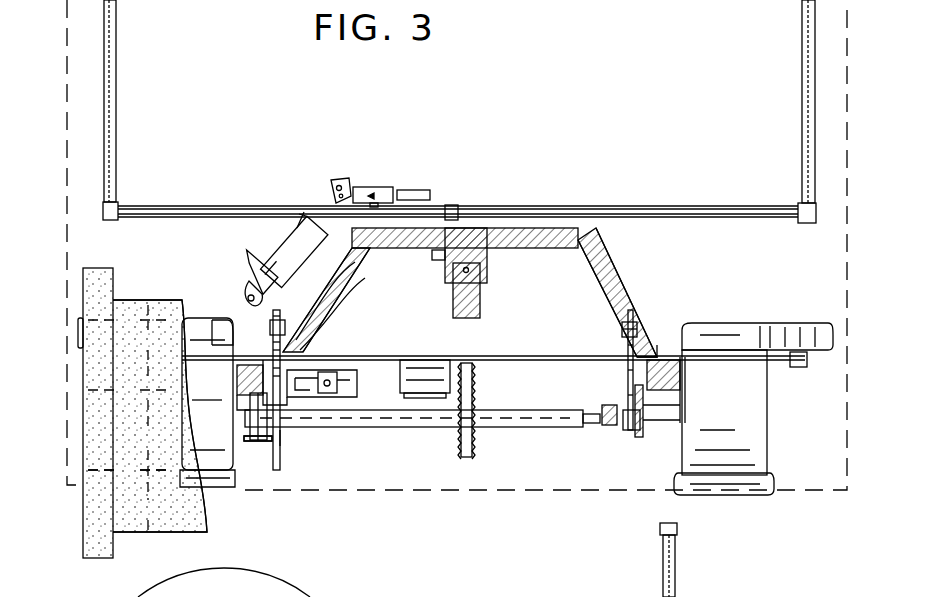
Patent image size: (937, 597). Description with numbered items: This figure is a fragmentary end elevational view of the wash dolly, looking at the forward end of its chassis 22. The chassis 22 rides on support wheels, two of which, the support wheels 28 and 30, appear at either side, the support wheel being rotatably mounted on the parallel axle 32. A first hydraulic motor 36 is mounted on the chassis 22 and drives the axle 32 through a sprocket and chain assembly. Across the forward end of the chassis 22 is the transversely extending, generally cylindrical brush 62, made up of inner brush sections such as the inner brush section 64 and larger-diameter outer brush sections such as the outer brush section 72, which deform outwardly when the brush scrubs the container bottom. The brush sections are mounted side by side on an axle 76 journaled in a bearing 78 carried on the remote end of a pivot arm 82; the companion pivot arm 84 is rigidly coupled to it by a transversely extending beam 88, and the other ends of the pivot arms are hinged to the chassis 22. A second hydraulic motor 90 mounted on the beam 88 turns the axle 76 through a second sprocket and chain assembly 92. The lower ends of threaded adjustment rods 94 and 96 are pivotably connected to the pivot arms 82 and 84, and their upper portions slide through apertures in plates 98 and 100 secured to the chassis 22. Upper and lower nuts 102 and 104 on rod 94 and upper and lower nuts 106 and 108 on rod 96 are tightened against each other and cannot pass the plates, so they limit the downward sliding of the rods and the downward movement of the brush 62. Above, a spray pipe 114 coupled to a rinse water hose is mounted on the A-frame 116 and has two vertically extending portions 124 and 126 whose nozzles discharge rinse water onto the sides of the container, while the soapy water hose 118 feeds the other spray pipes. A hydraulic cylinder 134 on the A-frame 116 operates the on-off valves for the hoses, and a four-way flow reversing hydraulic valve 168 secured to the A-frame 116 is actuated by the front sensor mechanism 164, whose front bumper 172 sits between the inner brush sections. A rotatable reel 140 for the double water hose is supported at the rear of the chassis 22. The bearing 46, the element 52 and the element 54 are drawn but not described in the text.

The chassis 22 is at (533, 358).
The support wheel 28 is at (745, 440).
The support wheel 30 is at (193, 318).
The axle 32 is at (593, 424).
The first hydraulic motor 36 is at (345, 376).
The bearing 46 is at (220, 320).
The roller housing 52 is at (803, 323).
The stub 54 is at (78, 332).
The brush 62 is at (158, 300).
The inner brush section 64 is at (165, 533).
The outer brush section 72 is at (100, 560).
The axle 76 is at (385, 430).
The bearing 78 is at (257, 433).
The pivot arm 82 is at (267, 437).
The pivot arm 84 is at (635, 393).
The beam 88 is at (610, 425).
The second hydraulic motor 90 is at (425, 365).
The second sprocket and chain assembly 92 is at (472, 372).
The threaded adjustment rod 94 is at (280, 388).
The threaded adjustment rod 96 is at (628, 382).
The plate 98 is at (303, 347).
The plate 100 is at (626, 352).
The upper nut 102 is at (322, 292).
The lower nut 104 is at (327, 303).
The upper nut 106 is at (640, 326).
The lower nut 108 is at (655, 348).
The spray pipe 114 is at (712, 206).
The A-frame 116 is at (604, 258).
The soapy water hose 118 is at (402, 187).
The vertically extending portion 124 is at (116, 47).
The vertically extending portion 126 is at (805, 42).
The hydraulic cylinder 134 is at (278, 252).
The reel 140 is at (224, 582).
The front sensor mechanism 164 is at (497, 280).
The four-way flow reversing hydraulic valve 168 is at (450, 205).
The front bumper 172 is at (480, 297).